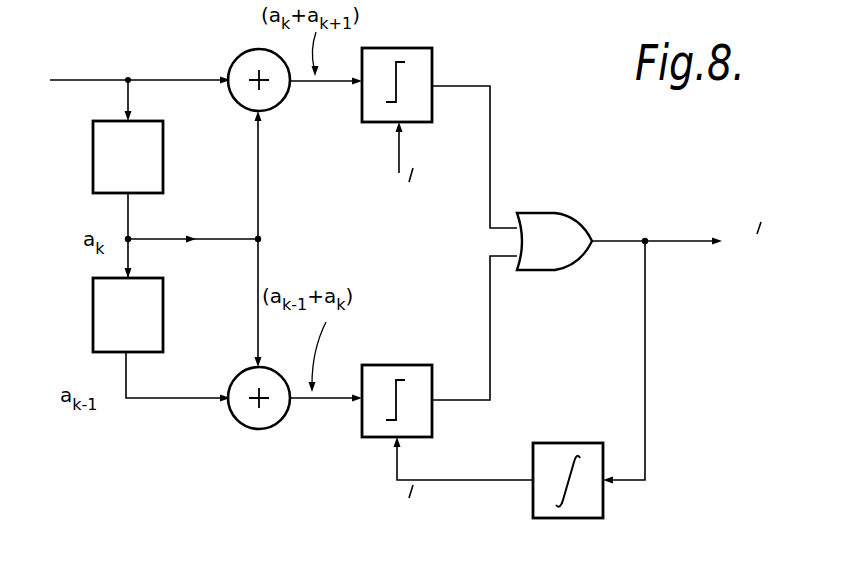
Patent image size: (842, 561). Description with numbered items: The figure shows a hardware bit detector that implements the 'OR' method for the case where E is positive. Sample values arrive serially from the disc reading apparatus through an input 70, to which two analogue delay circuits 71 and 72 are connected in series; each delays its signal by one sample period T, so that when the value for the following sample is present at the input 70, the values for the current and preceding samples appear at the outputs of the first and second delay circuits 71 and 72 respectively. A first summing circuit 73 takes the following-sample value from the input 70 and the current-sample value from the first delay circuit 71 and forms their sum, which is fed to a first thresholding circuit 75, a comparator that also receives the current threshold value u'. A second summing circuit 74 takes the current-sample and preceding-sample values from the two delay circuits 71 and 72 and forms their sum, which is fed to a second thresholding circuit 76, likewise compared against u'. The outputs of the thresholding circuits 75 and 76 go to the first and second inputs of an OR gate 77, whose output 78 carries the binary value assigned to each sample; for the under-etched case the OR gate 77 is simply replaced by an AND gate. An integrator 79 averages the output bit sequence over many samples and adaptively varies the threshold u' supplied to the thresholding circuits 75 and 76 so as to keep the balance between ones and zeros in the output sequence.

The input 70 is at (82, 80).
The first delay circuit 71 is at (163, 155).
The second delay circuit 72 is at (163, 315).
The first summing circuit 73 is at (281, 102).
The second summing circuit 74 is at (260, 429).
The first thresholding circuit 75 is at (432, 62).
The second thresholding circuit 76 is at (397, 365).
The OR gate 77 is at (555, 213).
The output 78 is at (671, 241).
The integrator 79 is at (565, 443).